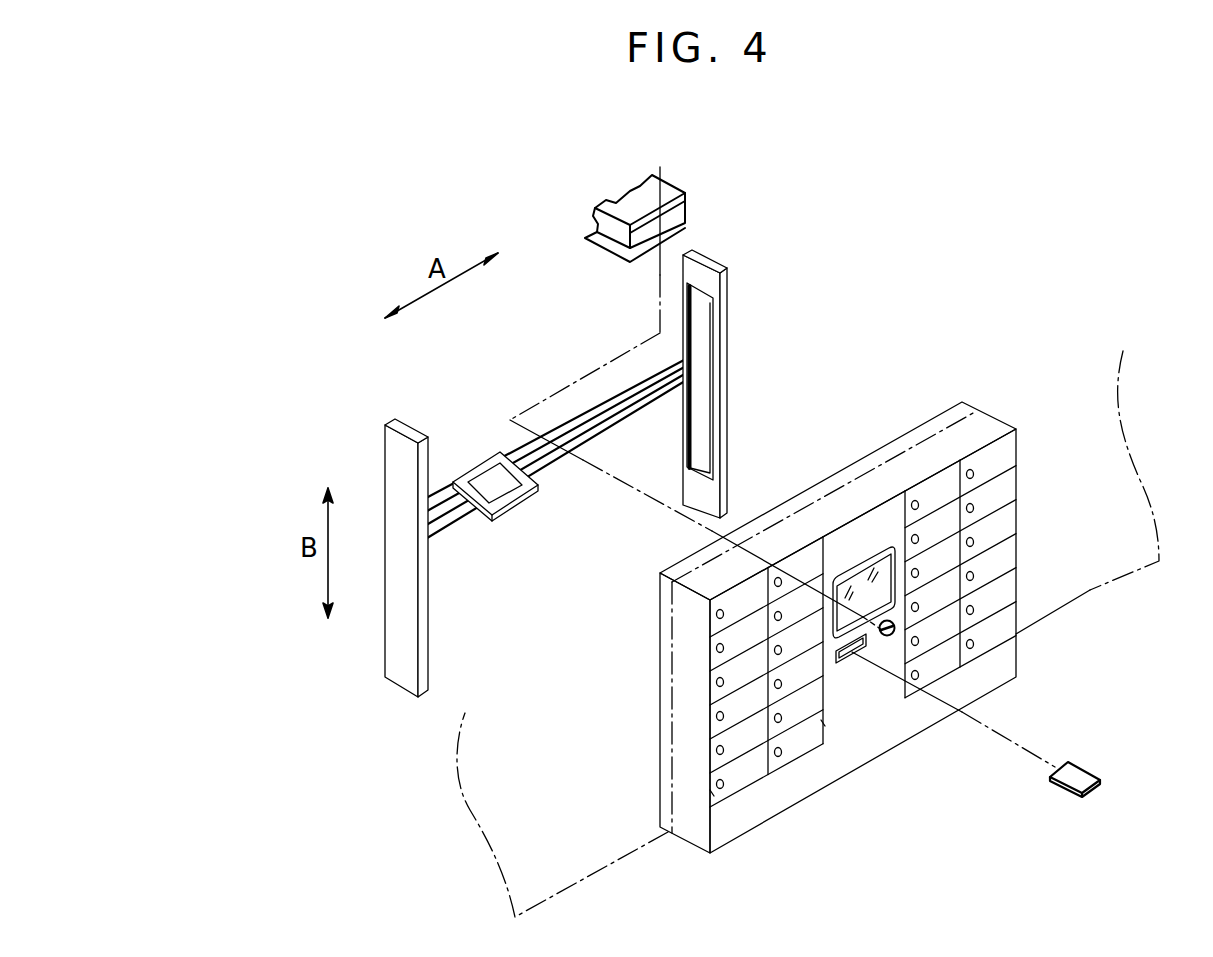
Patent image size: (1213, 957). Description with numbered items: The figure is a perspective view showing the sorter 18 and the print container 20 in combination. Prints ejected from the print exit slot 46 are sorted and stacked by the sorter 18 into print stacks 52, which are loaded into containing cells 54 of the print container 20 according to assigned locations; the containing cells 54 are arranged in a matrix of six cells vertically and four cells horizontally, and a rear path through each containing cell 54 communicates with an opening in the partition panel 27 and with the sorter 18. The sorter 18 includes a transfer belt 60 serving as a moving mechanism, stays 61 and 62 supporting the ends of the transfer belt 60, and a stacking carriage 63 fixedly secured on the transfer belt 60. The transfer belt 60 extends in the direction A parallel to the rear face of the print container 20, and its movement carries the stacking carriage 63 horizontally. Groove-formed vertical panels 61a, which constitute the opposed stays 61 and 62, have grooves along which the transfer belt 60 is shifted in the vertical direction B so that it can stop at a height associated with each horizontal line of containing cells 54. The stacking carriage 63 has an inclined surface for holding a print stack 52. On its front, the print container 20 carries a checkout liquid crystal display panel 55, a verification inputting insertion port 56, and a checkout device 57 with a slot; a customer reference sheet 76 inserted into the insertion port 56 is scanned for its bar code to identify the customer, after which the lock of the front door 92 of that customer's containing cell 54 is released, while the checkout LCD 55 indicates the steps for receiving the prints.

The sorter 18 is at (766, 268).
The print container 20 is at (854, 638).
The partition panel 27 is at (1093, 588).
The print exit slot 46 is at (668, 193).
The print stack 52 is at (490, 473).
The containing cell 54 is at (798, 750).
The checkout liquid crystal display panel 55 is at (863, 620).
The verification inputting insertion port 56 is at (840, 662).
The checkout device 57 is at (887, 637).
The transfer belt 60 is at (607, 410).
The stay 61 is at (743, 384).
The groove-formed vertical panel 61a is at (698, 468).
The stay 62 is at (393, 450).
The stacking carriage 63 is at (500, 503).
The customer reference sheet 76 is at (1085, 792).
The front door 92 is at (713, 793).